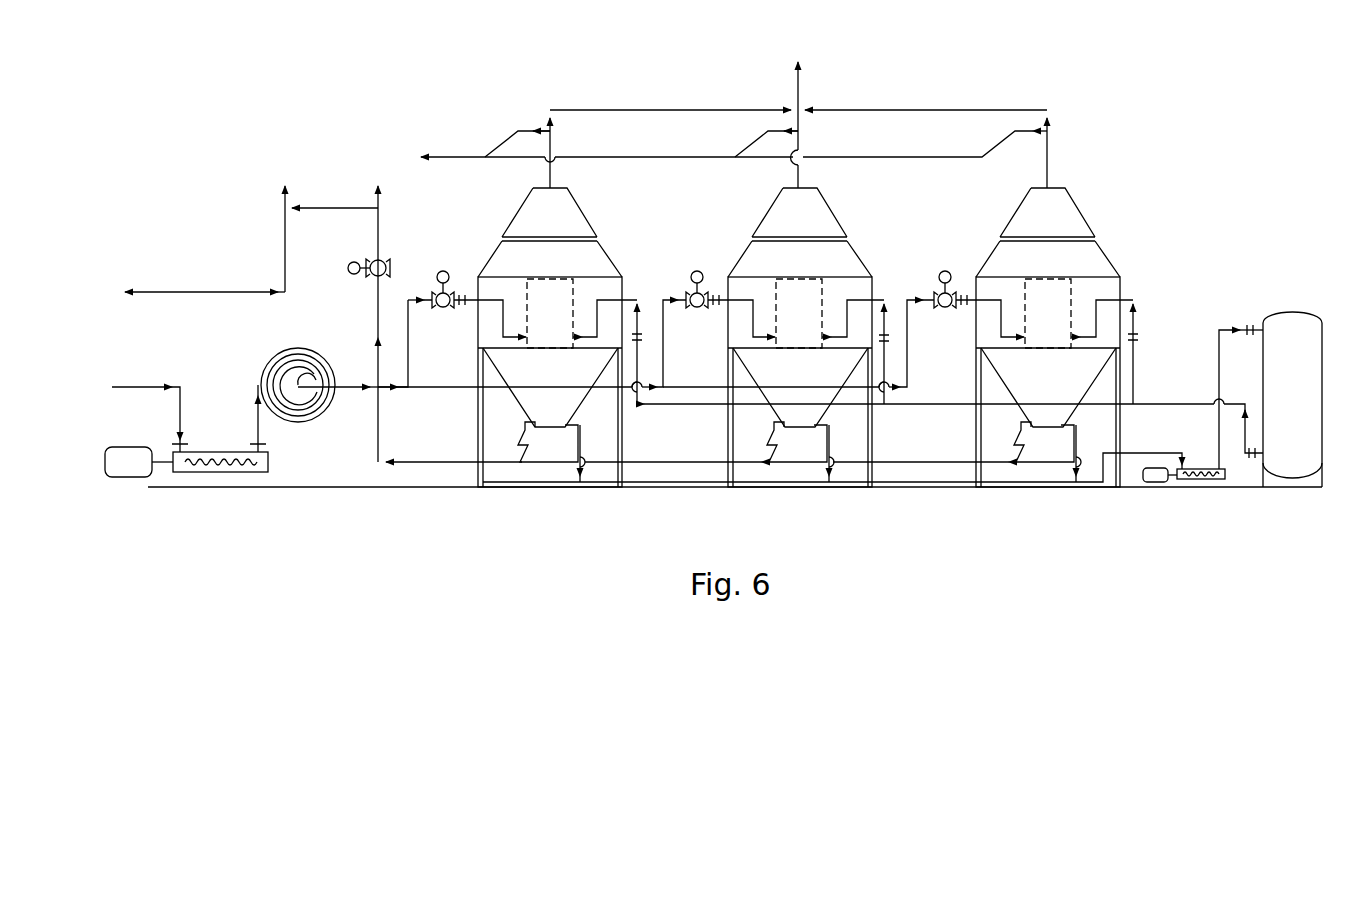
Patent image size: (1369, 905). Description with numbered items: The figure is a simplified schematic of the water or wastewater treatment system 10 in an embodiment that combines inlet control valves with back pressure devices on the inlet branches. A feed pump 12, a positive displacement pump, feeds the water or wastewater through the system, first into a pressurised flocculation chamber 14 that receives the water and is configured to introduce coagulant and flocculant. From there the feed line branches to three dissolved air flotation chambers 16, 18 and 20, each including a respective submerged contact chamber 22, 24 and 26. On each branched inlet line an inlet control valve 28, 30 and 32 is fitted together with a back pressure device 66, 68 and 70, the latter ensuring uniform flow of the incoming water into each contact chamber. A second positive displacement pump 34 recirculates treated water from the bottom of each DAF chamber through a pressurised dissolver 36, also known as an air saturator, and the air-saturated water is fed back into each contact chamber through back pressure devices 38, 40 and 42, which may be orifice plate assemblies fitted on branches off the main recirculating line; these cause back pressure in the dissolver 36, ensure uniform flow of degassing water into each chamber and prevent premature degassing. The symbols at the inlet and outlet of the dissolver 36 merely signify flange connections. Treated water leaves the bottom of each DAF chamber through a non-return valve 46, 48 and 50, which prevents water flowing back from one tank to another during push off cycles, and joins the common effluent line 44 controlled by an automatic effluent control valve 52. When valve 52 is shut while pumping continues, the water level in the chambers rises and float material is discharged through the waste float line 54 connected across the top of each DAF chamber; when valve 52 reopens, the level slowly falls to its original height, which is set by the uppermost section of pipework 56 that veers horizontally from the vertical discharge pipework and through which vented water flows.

The system 10 is at (1112, 158).
The feed pump 12 is at (200, 472).
The pressurised flocculation chamber 14 is at (298, 422).
The dissolved air flotation chamber 16 is at (600, 245).
The dissolved air flotation chamber 18 is at (850, 245).
The dissolved air flotation chamber 20 is at (1098, 245).
The submerged contact chamber 22 is at (575, 302).
The submerged contact chamber 24 is at (823, 300).
The submerged contact chamber 26 is at (1072, 302).
The inlet control valve 28 is at (447, 268).
The inlet control valve 30 is at (701, 268).
The inlet control valve 32 is at (950, 268).
The second positive displacement pump 34 is at (1190, 482).
The pressurised dissolver 36 is at (1278, 312).
The back pressure device 38 is at (643, 337).
The back pressure device 40 is at (890, 338).
The back pressure device 42 is at (1142, 338).
The effluent line 44 is at (253, 287).
The non-return valve 46 is at (515, 443).
The non-return valve 48 is at (760, 445).
The non-return valve 50 is at (1010, 445).
The effluent control valve 52 is at (349, 277).
The waste float line 54 is at (603, 158).
The uppermost section of pipework 56 is at (341, 200).
The back pressure device 66 is at (462, 308).
The back pressure device 68 is at (716, 292).
The back pressure device 70 is at (968, 292).